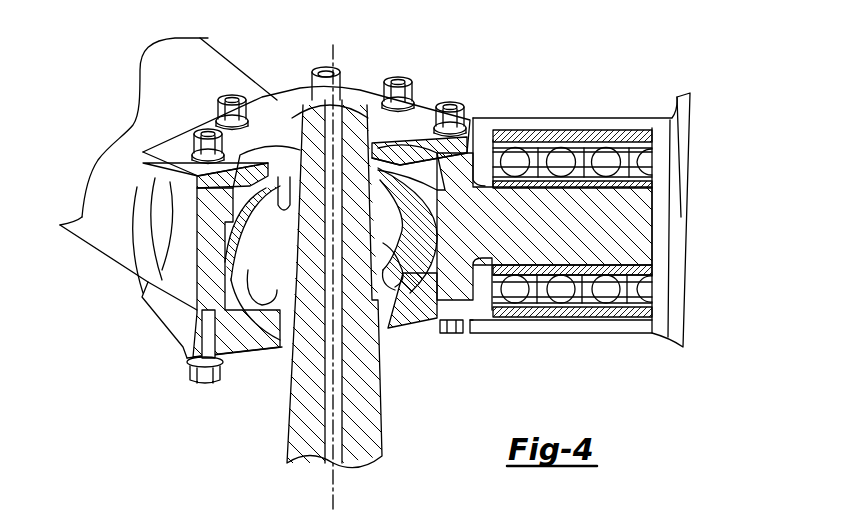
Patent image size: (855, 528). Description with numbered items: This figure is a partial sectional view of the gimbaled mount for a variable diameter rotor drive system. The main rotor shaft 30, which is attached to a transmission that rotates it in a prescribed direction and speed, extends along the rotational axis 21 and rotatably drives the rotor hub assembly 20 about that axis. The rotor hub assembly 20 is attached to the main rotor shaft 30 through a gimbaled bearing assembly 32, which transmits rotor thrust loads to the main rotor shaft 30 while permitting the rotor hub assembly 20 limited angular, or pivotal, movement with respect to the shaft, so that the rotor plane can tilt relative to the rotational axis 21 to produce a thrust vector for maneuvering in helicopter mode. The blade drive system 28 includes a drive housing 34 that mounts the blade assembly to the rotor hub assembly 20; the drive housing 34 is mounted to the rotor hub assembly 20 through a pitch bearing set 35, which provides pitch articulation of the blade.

The rotor hub assembly 20 is at (300, 90).
The rotational axis 21 is at (332, 498).
The blade drive system 28 is at (705, 213).
The main rotor shaft 30 is at (370, 418).
The gimbaled bearing assembly 32 is at (405, 330).
The drive housing 34 is at (547, 317).
The pitch bearing set 35 is at (567, 153).